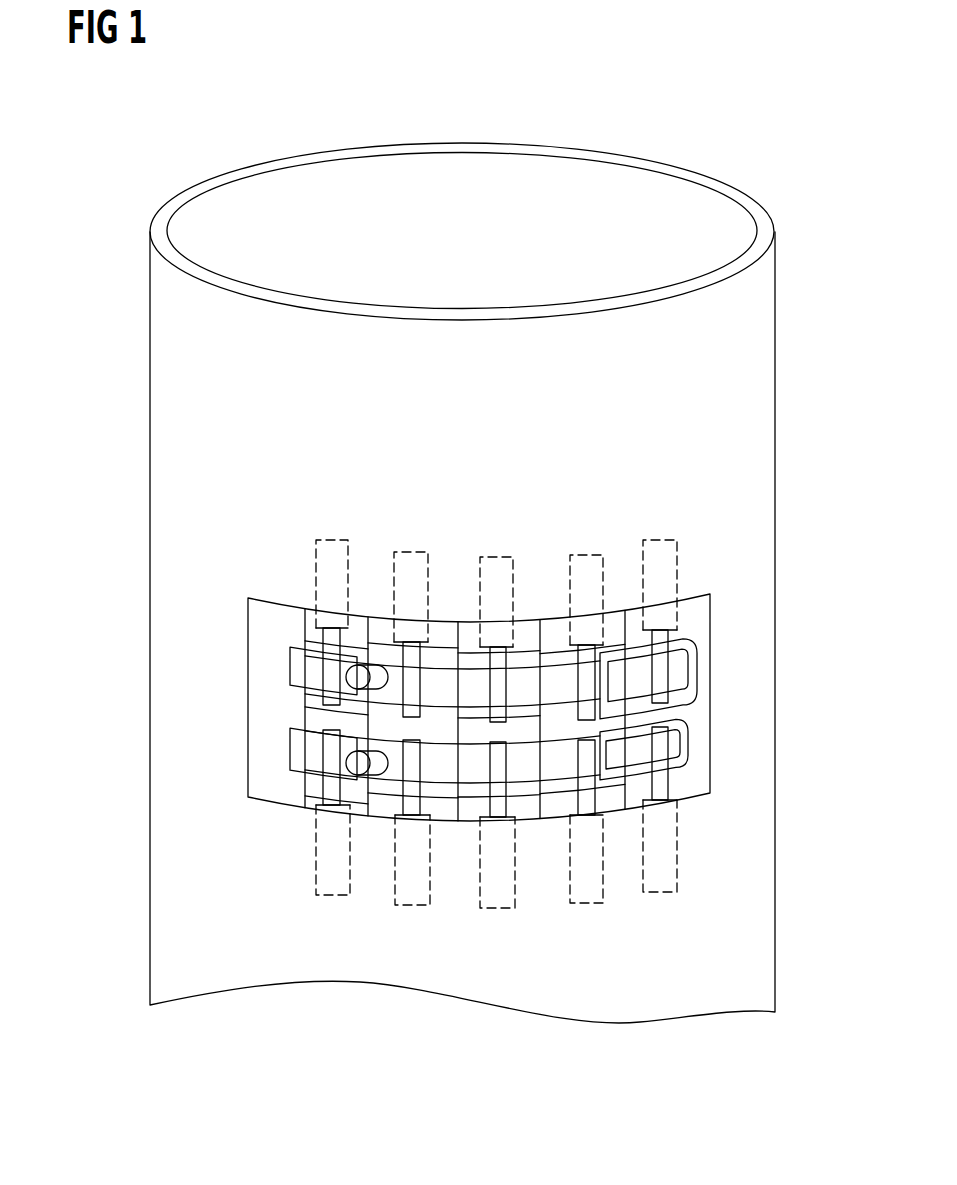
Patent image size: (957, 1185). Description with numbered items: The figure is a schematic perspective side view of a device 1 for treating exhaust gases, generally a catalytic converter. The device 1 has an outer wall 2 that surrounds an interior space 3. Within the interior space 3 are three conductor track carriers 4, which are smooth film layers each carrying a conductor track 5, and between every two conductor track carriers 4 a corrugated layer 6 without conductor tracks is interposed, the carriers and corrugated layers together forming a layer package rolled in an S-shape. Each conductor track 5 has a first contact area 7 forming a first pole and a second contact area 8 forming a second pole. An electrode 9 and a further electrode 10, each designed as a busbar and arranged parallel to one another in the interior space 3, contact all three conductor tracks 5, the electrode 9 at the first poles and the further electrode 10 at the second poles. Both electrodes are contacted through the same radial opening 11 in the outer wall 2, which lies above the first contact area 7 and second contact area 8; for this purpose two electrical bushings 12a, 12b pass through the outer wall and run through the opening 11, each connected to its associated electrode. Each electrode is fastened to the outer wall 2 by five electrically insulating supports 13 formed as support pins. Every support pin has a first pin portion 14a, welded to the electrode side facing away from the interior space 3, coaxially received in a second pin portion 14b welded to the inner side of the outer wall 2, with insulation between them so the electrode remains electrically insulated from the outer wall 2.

The device for treating exhaust gases 1 is at (718, 72).
The outer wall 2 is at (182, 331).
The interior space 3 is at (461, 188).
The conductor track carrier 4 is at (694, 717).
The conductor track 5 is at (580, 713).
The corrugated layer 6 is at (557, 638).
The first contact area 7 is at (693, 670).
The second contact area 8 is at (690, 770).
The electrode 9 is at (305, 663).
The further electrode 10 is at (305, 751).
The opening 11 is at (305, 777).
The electrical bushing 12a is at (382, 672).
The electrical bushing 12b is at (378, 764).
The electrically insulating support 13 is at (696, 565).
The first pin portion 14a is at (330, 694).
The second pin portion 14b is at (332, 562).